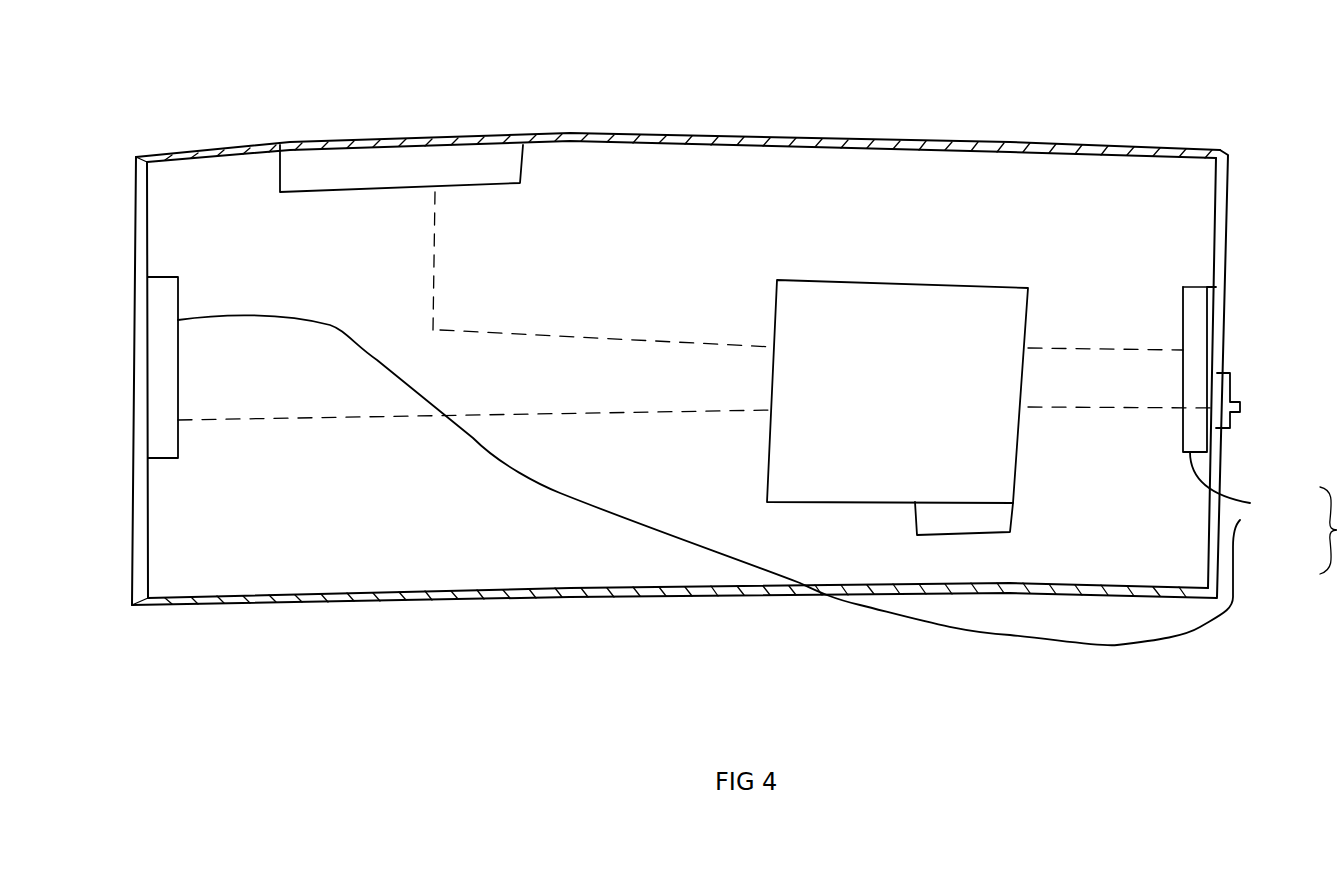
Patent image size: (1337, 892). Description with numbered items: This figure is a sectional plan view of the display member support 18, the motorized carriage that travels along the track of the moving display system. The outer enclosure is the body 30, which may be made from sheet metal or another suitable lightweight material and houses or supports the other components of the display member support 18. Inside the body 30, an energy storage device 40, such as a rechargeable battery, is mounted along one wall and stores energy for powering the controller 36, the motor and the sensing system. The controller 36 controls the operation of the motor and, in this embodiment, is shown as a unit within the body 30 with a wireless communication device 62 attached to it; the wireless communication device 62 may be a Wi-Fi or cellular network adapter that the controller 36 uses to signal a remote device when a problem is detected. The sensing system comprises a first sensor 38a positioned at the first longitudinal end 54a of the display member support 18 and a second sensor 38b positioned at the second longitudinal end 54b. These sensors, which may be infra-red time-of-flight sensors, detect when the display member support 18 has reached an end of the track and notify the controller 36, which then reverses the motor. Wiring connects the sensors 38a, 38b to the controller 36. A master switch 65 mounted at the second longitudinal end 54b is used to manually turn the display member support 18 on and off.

The display member support 18 is at (933, 50).
The body 30 is at (977, 143).
The controller 36 is at (873, 282).
The first sensor 38a is at (1240, 520).
The second sensor 38b is at (1250, 503).
The energy storage device 40 is at (523, 163).
The first longitudinal end 54a is at (138, 207).
The second longitudinal end 54b is at (1233, 235).
The wireless communication device 62 is at (1013, 520).
The master switch 65 is at (1233, 382).